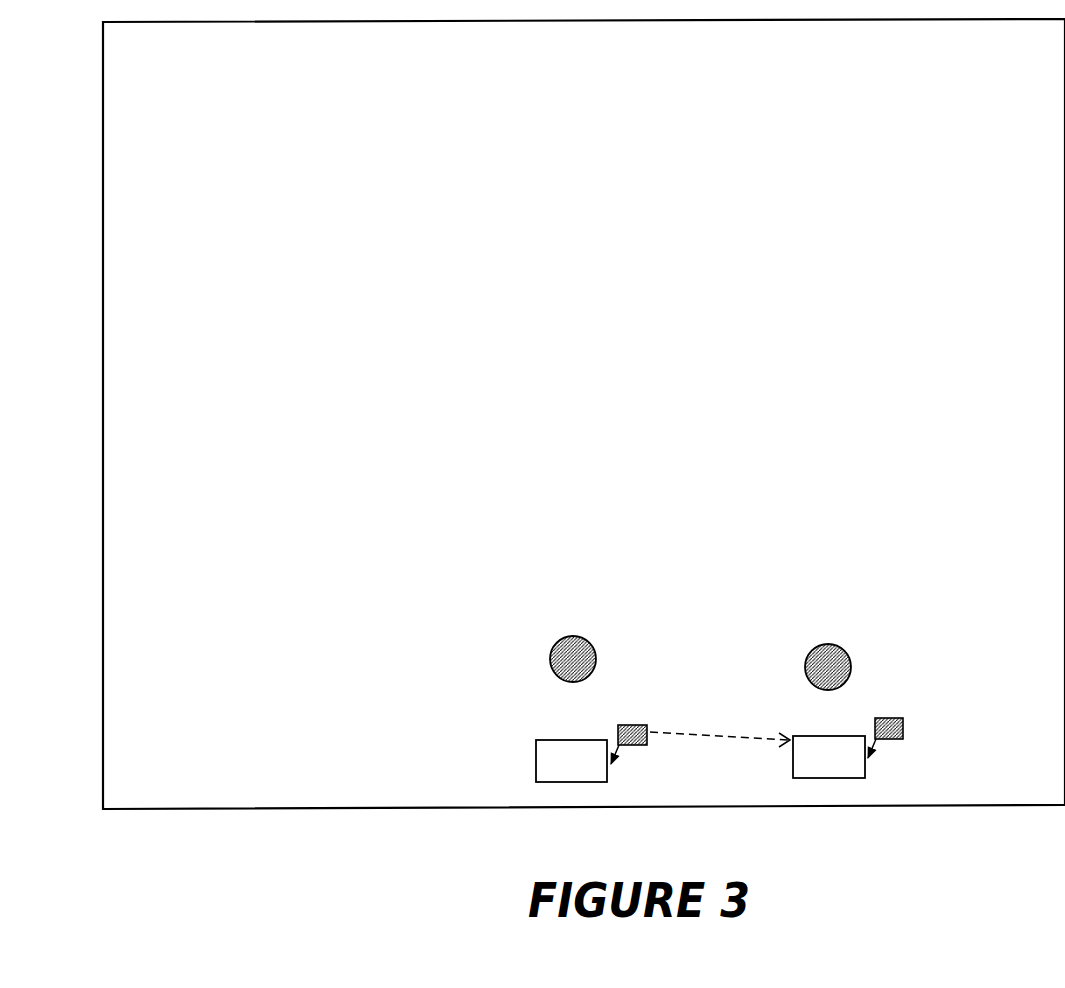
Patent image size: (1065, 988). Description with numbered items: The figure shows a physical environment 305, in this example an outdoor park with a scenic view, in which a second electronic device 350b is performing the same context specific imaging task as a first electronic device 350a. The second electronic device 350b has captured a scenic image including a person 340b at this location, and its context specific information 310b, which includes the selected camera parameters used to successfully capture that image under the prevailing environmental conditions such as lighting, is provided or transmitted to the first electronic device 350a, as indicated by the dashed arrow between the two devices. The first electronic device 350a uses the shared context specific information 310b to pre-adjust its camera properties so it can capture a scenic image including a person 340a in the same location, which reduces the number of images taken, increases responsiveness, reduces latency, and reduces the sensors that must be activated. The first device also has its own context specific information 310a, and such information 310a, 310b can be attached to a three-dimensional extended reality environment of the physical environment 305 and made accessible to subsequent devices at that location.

The physical environment 305 is at (1023, 349).
The person 340a is at (806, 659).
The person 340b is at (551, 652).
The context specific information 310a is at (903, 727).
The context specific information 310b is at (650, 737).
The first electronic device 350a is at (829, 757).
The second electronic device 350b is at (571, 761).